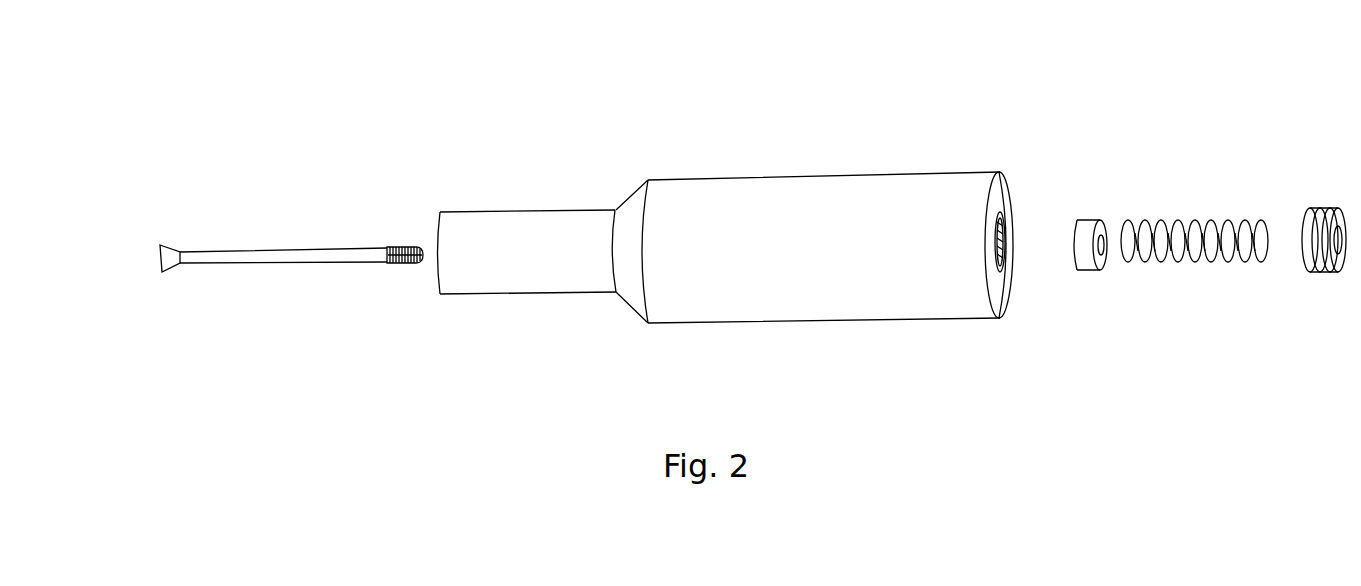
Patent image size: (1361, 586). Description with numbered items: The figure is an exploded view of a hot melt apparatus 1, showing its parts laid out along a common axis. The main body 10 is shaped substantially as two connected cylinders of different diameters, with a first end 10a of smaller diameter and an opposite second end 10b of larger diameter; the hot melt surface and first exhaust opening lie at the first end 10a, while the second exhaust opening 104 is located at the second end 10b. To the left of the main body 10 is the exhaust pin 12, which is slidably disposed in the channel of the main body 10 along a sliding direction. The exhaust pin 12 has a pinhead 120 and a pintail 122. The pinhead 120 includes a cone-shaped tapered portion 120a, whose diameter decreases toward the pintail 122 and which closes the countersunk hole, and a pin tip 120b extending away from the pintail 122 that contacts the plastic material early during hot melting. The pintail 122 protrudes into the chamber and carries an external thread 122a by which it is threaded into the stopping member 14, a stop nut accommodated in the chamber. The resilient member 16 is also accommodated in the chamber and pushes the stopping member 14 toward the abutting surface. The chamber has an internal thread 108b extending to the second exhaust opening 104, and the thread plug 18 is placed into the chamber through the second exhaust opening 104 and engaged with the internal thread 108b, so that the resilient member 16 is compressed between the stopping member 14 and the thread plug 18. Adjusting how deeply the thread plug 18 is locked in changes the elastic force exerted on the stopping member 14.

The hot melt apparatus 1 is at (1352, 57).
The exhaust pin 12 is at (322, 186).
The pinhead 120 is at (263, 132).
The tapered portion 120a is at (172, 246).
The pin tip 120b is at (157, 262).
The pintail 122 is at (422, 246).
The external thread 122a is at (397, 263).
The main body 10 is at (783, 187).
The first end 10a is at (424, 290).
The second end 10b is at (1016, 178).
The second exhaust opening 104 is at (1008, 275).
The internal thread 108b is at (1002, 242).
The stopping member 14 is at (1083, 233).
The resilient member 16 is at (1190, 223).
The thread plug 18 is at (1308, 213).